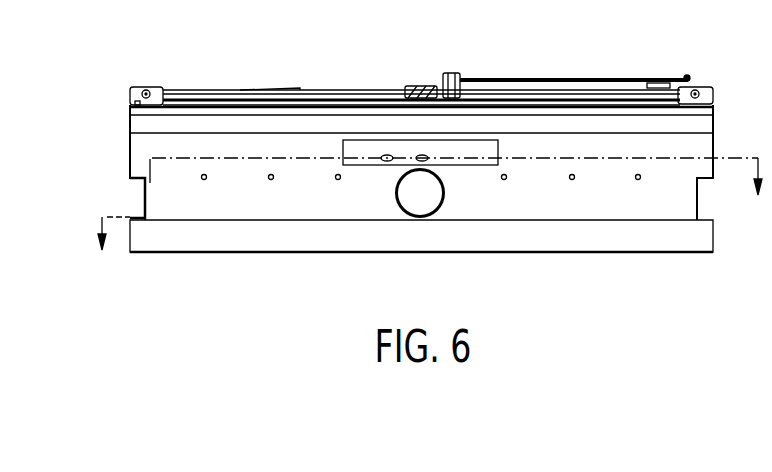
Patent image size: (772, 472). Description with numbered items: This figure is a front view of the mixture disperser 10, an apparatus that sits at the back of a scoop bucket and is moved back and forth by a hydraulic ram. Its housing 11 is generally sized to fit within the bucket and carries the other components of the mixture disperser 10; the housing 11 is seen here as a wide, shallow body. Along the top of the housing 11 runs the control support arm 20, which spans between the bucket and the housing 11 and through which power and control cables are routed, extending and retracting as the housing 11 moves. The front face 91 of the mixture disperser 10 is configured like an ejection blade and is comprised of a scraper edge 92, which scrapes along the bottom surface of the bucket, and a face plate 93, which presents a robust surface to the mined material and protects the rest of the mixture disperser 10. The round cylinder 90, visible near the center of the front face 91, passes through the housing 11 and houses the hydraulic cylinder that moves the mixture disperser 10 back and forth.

The mixture disperser 10 is at (248, 70).
The housing 11 is at (130, 128).
The control support arm 20 is at (590, 83).
The cylinder 90 is at (425, 203).
The front face 91 is at (108, 97).
The scraper edge 92 is at (322, 253).
The face plate 93 is at (197, 195).